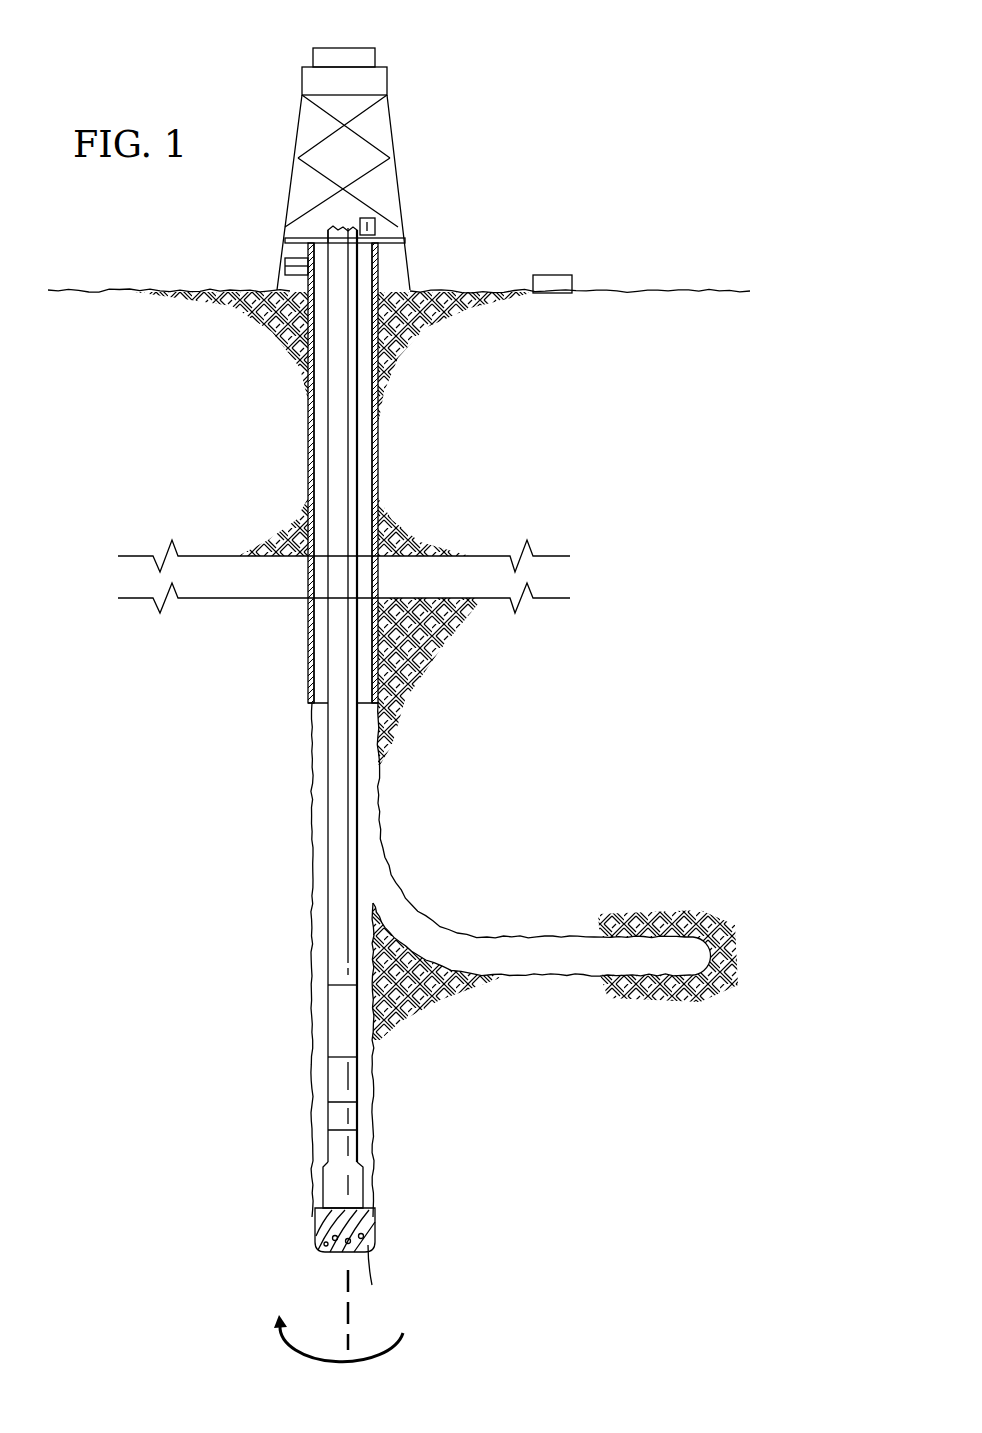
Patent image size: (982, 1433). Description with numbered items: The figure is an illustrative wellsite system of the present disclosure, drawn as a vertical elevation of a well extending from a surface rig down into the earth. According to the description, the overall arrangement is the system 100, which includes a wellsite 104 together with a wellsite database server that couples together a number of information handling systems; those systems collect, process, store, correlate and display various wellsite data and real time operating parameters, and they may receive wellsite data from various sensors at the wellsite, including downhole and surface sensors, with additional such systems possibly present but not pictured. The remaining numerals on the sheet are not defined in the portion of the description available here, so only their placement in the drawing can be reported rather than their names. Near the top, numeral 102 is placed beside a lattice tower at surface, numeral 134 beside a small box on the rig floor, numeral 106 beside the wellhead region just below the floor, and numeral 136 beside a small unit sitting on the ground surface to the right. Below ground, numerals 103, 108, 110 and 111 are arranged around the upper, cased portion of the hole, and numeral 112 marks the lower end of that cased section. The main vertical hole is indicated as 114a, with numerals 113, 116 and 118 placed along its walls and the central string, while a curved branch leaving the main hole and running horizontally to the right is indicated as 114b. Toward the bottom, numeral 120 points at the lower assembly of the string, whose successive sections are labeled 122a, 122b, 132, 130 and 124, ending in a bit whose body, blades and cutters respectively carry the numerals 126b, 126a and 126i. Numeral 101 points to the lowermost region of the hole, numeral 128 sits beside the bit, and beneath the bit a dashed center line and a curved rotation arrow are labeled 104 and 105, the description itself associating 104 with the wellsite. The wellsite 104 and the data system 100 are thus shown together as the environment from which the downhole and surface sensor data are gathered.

The system 100 is at (560, 56).
The wellbore bottom / downhole end 101 is at (294, 1246).
The drilling rig / derrick 102 is at (228, 96).
The drill string 103 is at (370, 405).
The wellsite 104 is at (338, 1285).
The rotation direction 105 is at (405, 1338).
The wellhead 106 is at (395, 260).
The casing 108 is at (340, 473).
The casing wall / cement 110 is at (308, 467).
The annulus 111 is at (368, 462).
The casing shoe 112 is at (328, 638).
The wellbore wall 113 is at (373, 815).
The main wellbore 114a is at (284, 933).
The lateral wellbore 114b is at (533, 912).
The drill pipe 116 is at (340, 695).
The open hole wall 118 is at (313, 880).
The bottom hole assembly 120 is at (348, 1084).
The drill collar 122a is at (338, 1013).
The drill collar 122b is at (338, 1080).
The bit sub 124 is at (322, 1188).
The drill bit blade 126a is at (322, 1242).
The drill bit body 126b is at (318, 1222).
The drill bit cutter 126i is at (372, 1224).
The bit face 128 is at (380, 1280).
The measurement tool 130 is at (338, 1148).
The logging tool 132 is at (338, 1116).
The surface control unit 134 is at (380, 223).
The remote unit 136 is at (558, 275).